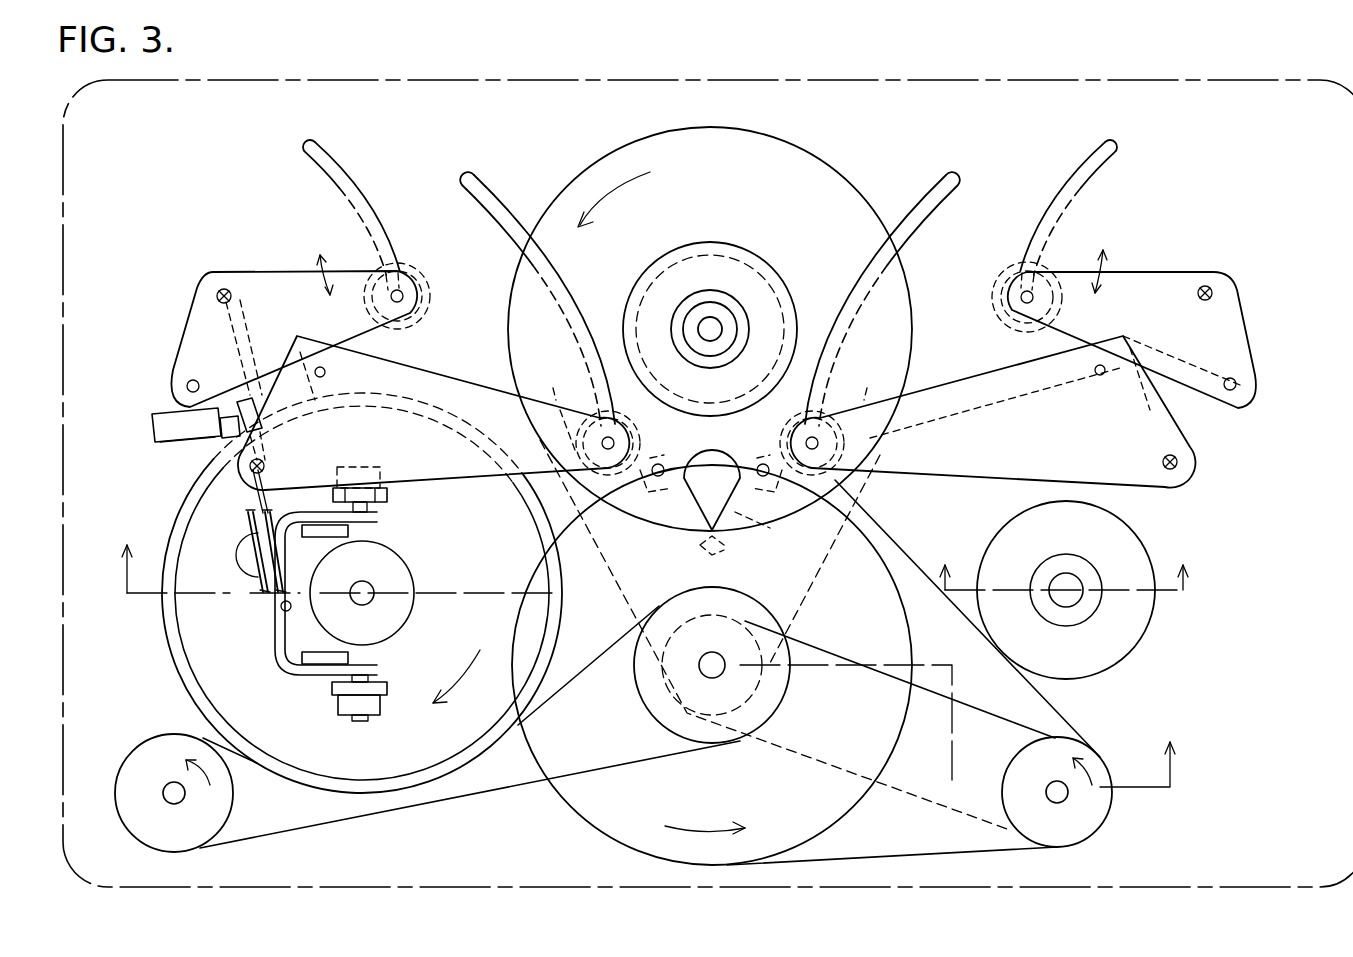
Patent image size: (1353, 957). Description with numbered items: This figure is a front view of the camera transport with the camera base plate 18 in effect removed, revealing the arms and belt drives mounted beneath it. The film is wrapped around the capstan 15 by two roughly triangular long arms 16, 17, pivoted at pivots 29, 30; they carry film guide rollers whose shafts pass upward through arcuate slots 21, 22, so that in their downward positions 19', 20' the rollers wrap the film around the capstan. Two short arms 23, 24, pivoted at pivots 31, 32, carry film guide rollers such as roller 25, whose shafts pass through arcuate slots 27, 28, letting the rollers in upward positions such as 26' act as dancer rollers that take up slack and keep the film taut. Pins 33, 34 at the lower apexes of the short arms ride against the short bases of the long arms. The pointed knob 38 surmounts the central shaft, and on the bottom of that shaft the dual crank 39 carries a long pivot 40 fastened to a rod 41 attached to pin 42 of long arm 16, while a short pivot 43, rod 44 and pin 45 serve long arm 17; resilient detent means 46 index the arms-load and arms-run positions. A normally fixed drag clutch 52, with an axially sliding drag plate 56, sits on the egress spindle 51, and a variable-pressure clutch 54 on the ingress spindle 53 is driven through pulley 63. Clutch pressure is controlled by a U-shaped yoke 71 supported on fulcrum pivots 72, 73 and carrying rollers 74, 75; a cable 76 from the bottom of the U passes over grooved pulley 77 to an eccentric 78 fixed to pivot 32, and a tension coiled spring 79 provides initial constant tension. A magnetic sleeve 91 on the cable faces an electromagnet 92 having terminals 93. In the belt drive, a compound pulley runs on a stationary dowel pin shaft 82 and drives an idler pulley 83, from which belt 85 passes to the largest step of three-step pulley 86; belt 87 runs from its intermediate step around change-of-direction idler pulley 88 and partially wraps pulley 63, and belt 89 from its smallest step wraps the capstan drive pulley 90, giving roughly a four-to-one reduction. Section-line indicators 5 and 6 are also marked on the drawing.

The capstan 15 is at (762, 276).
The long arm 16 is at (973, 456).
The long arm 17 is at (385, 451).
The camera base plate 18 is at (570, 86).
The film guide roller downward position 19' is at (832, 441).
The film guide roller downward position 20' is at (587, 439).
The arcuate slot 21 is at (908, 222).
The arcuate slot 22 is at (500, 226).
The short arm 23 is at (1115, 314).
The short arm 24 is at (268, 344).
The film guide roller 25 is at (990, 286).
The film guide roller upward position 26' is at (424, 296).
The arcuate slot 27 is at (1090, 168).
The arcuate slot 28 is at (334, 178).
The pivot 29 is at (1162, 463).
The pivot 30 is at (265, 466).
The pivot 31 is at (1203, 302).
The pivot 32 is at (232, 333).
The pin 33 is at (1226, 379).
The pin 34 is at (194, 380).
The pointed knob 38 is at (690, 535).
The dual crank 39 is at (758, 530).
The long pivot 40 is at (760, 480).
The tensile-compressive stress member 41 is at (873, 375).
The pin 42 is at (1094, 371).
The short pivot 43 is at (660, 480).
The rod 44 is at (548, 375).
The pin 45 is at (326, 372).
The detent means 46 is at (730, 553).
The egress spindle 51 is at (1078, 580).
The drag clutch 52 is at (1155, 647).
The ingress spindle 53 is at (366, 590).
The variable-pressure clutch 54 is at (236, 566).
The drag plate 56 is at (1108, 636).
The pulley 63 is at (530, 513).
The yoke 71 is at (274, 650).
The fulcrum pivot 72 is at (318, 537).
The fulcrum pivot 73 is at (349, 660).
The roller 74 is at (388, 496).
The roller 75 is at (388, 688).
The cable 76 is at (255, 505).
The grooved pulley 77 is at (258, 594).
The eccentric 78 is at (233, 293).
The tension coiled spring 79 is at (288, 612).
The stationary dowel pin shaft 82 is at (716, 675).
The idler pulley 83 is at (1105, 758).
The belt 85 is at (1010, 722).
The three-step pulley 86 is at (903, 727).
The belt 87 is at (535, 782).
The change-of-direction idler pulley 88 is at (236, 797).
The belt 89 is at (852, 508).
The capstan drive pulley 90 is at (832, 176).
The magnetic sleeve 91 is at (257, 408).
The electromagnet 92 is at (192, 441).
The terminals 93 is at (152, 428).
The section line 5- 5 is at (648, 646).
The section line 6- 6 is at (965, 655).